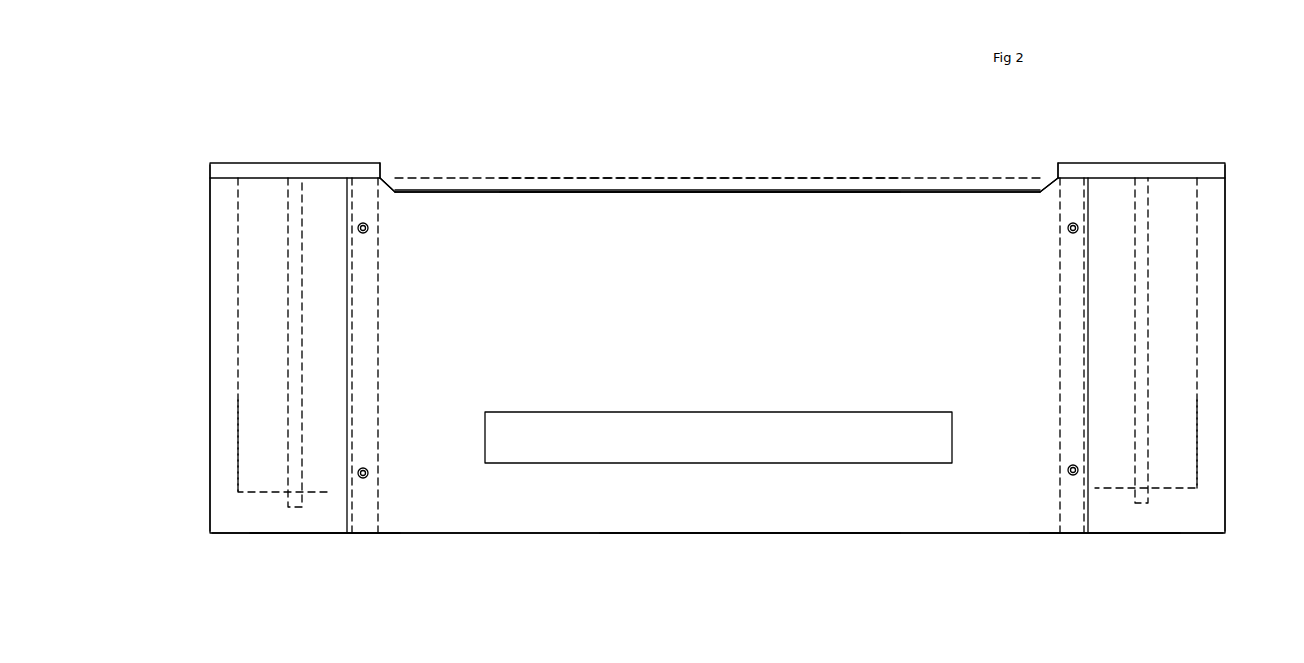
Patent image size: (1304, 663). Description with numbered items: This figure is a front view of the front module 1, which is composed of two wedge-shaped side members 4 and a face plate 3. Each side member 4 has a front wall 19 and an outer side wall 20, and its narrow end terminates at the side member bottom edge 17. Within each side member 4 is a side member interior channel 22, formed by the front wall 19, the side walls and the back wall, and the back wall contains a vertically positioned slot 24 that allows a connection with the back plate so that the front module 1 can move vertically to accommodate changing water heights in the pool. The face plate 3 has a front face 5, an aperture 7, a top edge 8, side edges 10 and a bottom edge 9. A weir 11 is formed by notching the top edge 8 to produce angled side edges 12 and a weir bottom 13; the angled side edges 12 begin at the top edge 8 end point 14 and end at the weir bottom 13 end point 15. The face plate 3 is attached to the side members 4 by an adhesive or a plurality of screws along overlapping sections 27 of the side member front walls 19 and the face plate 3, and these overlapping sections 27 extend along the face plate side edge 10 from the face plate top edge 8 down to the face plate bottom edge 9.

The front module 1 is at (717, 306).
The face plate 3 is at (717, 557).
The side members 4 is at (717, 149).
The front face 5 is at (717, 260).
The aperture 7 is at (718, 437).
The top edge 8 is at (372, 176).
The bottom edge 9 is at (772, 535).
The side edges 10 is at (351, 371).
The weir 11 is at (683, 186).
The angled side edges 12 is at (394, 182).
The weir bottom 13 is at (797, 191).
The end point 14 is at (392, 180).
The end point 15 is at (396, 184).
The side member bottom edge 17 is at (310, 535).
The front wall 19 is at (717, 342).
The outer side wall 20 is at (210, 252).
The side member interior channel 22 is at (290, 328).
The slot 24 is at (1150, 333).
The overlapping sections 27 is at (376, 314).